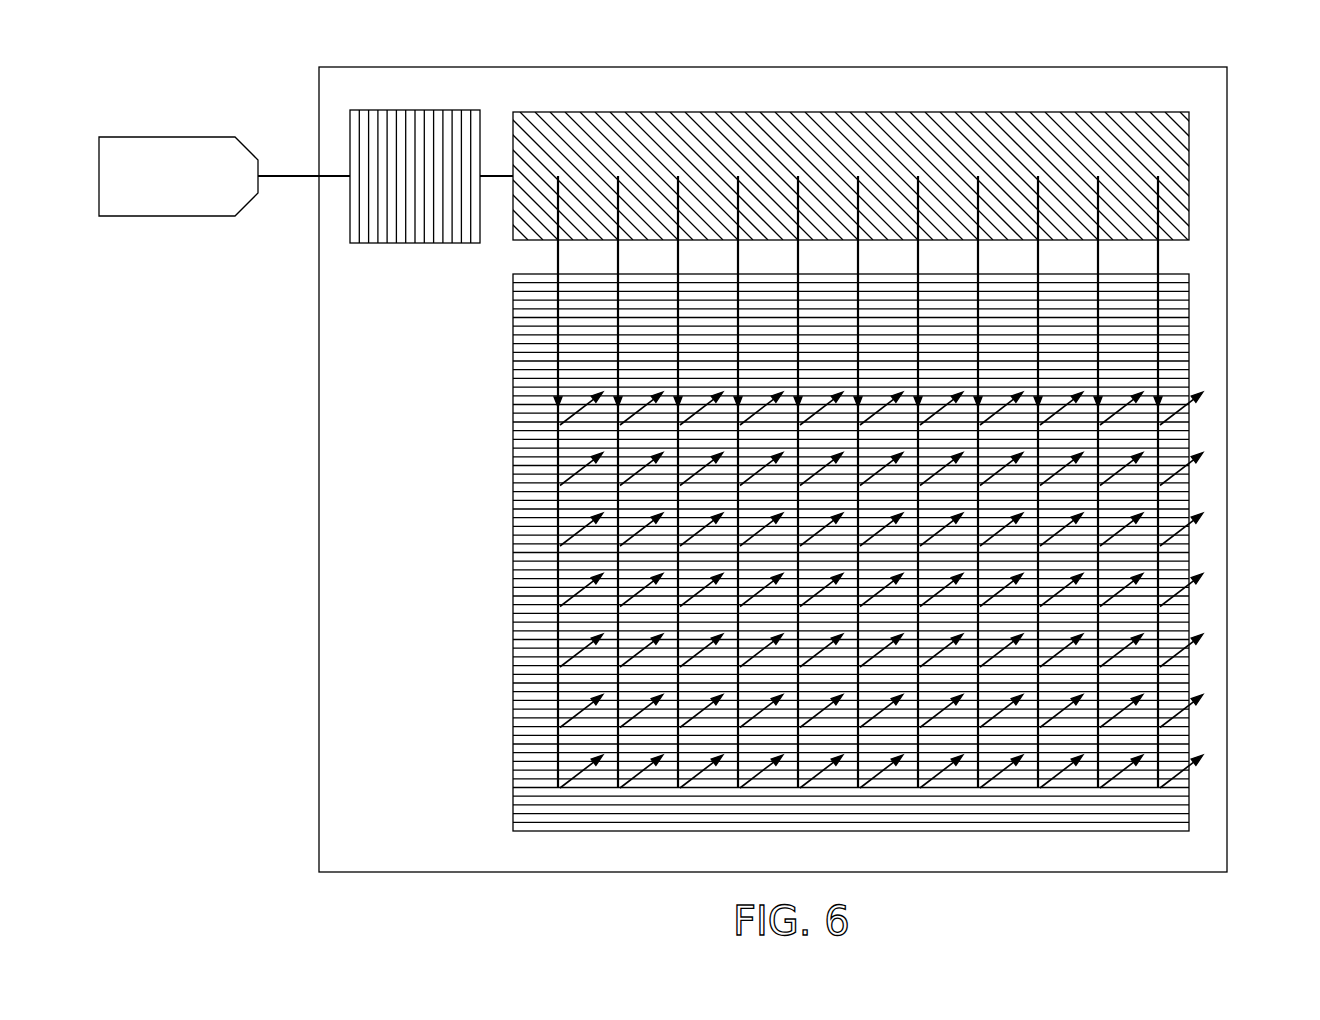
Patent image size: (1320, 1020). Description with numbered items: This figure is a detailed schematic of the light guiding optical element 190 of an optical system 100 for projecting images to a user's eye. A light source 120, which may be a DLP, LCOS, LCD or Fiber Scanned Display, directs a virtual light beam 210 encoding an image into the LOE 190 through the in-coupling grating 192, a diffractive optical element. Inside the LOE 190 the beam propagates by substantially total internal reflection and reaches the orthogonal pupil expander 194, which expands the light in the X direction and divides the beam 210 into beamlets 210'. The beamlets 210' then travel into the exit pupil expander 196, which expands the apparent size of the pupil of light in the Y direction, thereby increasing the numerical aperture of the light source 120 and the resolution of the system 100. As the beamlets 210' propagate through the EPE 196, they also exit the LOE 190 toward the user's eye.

The optical system 100 is at (263, 76).
The light source 120 is at (155, 152).
The light guiding optical element 190 is at (319, 493).
The in-coupling grating 192 is at (418, 110).
The orthogonal pupil expander 194 is at (868, 112).
The exit pupil expander 196 is at (1189, 495).
The virtual light beam 210 is at (380, 217).
The beamlets 210' is at (865, 482).